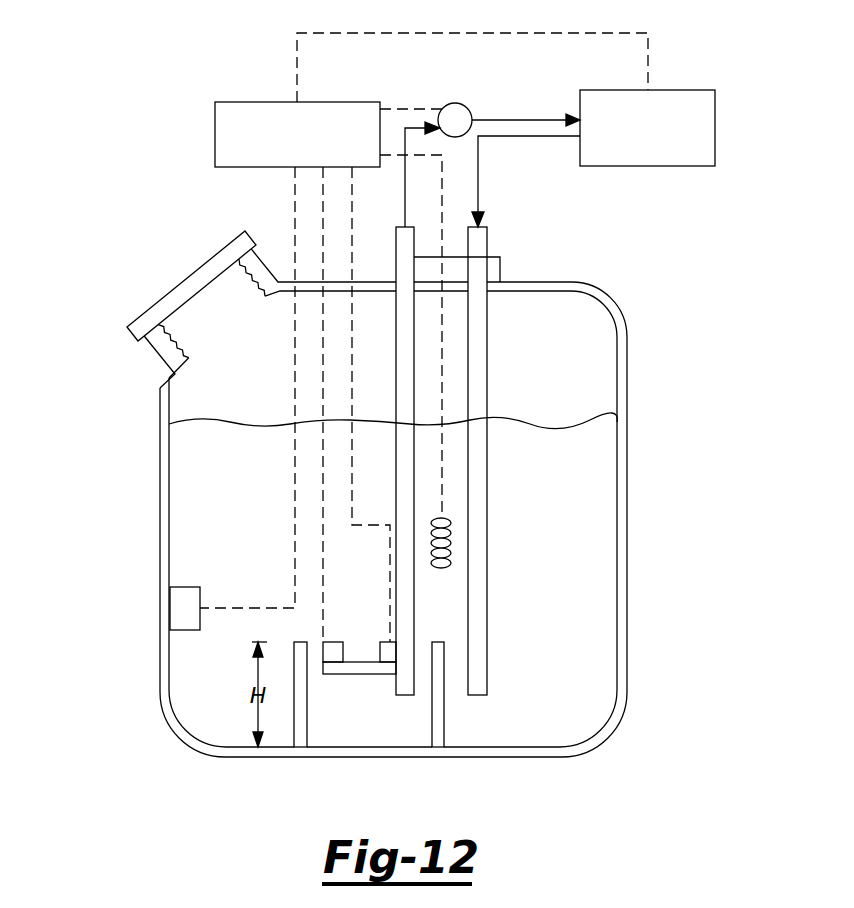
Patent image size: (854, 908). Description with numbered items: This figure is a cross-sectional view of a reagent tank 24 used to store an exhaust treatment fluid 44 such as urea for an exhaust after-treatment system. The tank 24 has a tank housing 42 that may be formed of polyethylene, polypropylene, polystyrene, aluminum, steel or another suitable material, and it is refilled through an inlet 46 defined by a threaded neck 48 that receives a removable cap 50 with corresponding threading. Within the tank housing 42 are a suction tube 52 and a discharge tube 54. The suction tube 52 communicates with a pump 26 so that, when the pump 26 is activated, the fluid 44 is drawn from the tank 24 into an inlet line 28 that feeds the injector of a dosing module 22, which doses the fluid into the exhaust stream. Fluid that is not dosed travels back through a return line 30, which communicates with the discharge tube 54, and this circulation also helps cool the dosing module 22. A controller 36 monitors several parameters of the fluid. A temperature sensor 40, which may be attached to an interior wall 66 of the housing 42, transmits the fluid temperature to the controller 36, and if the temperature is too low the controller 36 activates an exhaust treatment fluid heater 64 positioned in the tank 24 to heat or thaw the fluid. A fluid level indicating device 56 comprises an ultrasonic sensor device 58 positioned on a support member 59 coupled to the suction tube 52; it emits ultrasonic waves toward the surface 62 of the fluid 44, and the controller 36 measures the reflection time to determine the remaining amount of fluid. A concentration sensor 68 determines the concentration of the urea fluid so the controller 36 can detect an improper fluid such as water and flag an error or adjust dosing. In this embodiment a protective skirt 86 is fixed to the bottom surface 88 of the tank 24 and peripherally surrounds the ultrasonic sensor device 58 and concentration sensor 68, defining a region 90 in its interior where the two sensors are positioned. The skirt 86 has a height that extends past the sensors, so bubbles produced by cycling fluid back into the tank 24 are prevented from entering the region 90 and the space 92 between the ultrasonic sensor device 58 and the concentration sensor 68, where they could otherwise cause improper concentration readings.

The dosing module 22 is at (648, 166).
The reagent tank 24 is at (425, 503).
The pump 26 is at (462, 104).
The inlet line 28 is at (541, 120).
The return line 30 is at (543, 136).
The controller 36 is at (215, 127).
The temperature sensor 40 is at (178, 587).
The tank housing 42 is at (627, 462).
The exhaust treatment fluid 44 is at (246, 487).
The inlet 46 is at (222, 315).
The threaded neck 48 is at (245, 286).
The removable cap 50 is at (196, 272).
The suction tube 52 is at (396, 497).
The discharge tube 54 is at (487, 443).
The fluid level indicating device 56 is at (342, 733).
The ultrasonic sensor device 58 is at (322, 658).
The support member 59 is at (385, 675).
The surface 62 is at (250, 424).
The exhaust treatment fluid heater 64 is at (441, 568).
The interior wall 66 is at (617, 518).
The concentration sensor 68 is at (383, 642).
The protective skirt 86 is at (296, 727).
The bottom surface 88 is at (518, 745).
The region 90 is at (388, 722).
The space 92 is at (360, 655).